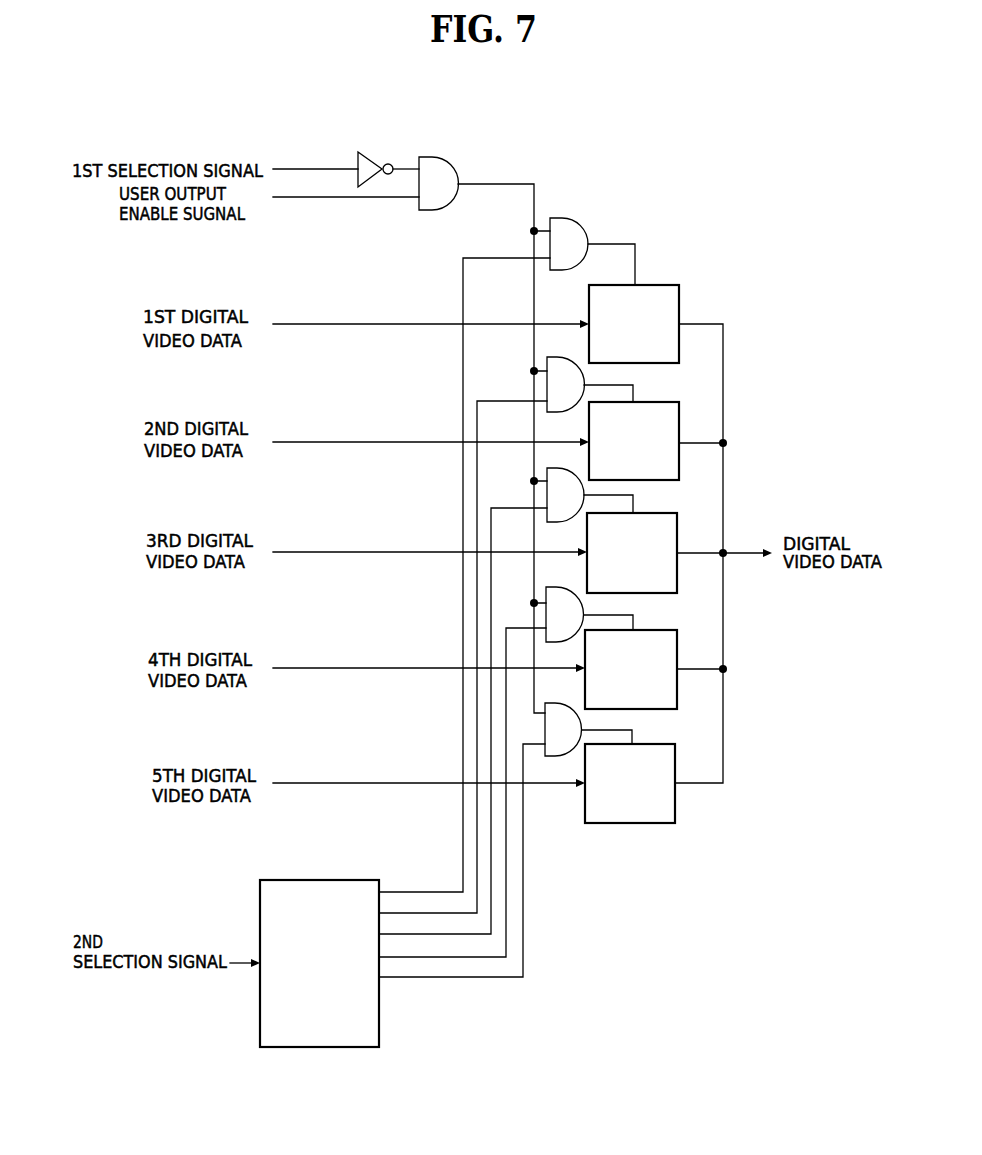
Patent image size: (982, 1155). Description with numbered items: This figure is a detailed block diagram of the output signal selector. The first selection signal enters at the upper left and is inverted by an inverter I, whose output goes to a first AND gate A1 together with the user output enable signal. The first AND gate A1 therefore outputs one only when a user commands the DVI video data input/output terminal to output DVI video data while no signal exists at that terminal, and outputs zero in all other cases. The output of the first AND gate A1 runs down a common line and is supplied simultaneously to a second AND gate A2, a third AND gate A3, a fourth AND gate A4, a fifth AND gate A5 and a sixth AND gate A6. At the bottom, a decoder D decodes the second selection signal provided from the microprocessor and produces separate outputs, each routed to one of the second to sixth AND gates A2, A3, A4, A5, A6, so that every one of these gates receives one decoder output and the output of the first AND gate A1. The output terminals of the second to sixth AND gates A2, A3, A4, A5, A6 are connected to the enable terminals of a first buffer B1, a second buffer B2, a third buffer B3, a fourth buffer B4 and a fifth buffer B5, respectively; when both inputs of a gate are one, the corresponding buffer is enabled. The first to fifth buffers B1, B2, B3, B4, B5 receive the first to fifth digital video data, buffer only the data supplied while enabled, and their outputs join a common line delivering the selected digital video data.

The inverter I is at (372, 152).
The first AND gate A1 is at (437, 157).
The second AND gate A2 is at (567, 218).
The third AND gate A3 is at (547, 364).
The fourth AND gate A4 is at (547, 473).
The fifth AND gate A5 is at (546, 591).
The sixth AND gate A6 is at (545, 729).
The first buffer B1 is at (663, 285).
The second buffer B2 is at (660, 402).
The third buffer B3 is at (660, 513).
The fourth buffer B4 is at (660, 630).
The fifth buffer B5 is at (660, 744).
The decoder D is at (322, 880).